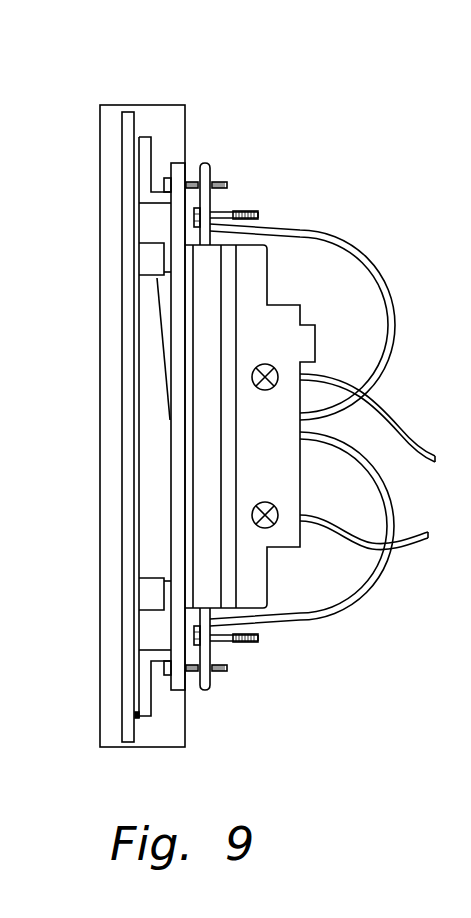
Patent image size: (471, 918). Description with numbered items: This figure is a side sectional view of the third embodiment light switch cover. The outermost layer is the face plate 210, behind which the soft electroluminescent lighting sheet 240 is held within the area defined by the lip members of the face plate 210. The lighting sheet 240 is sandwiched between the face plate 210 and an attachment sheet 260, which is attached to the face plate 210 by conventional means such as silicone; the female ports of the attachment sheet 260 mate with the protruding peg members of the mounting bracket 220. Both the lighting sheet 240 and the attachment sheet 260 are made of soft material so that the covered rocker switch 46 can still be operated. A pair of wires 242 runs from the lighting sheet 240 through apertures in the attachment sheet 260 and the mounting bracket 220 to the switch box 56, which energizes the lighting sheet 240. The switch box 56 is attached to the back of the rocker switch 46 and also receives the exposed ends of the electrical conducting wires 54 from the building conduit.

The face plate 210 is at (102, 552).
The electroluminescent lighting sheet 240 is at (128, 112).
The mounting bracket 220 is at (139, 718).
The rocker switch 46 is at (160, 292).
The attachment sheet 260 is at (138, 718).
The switch box 56 is at (302, 460).
The wires 242 is at (367, 268).
The electrical conducting wires 54 is at (387, 407).